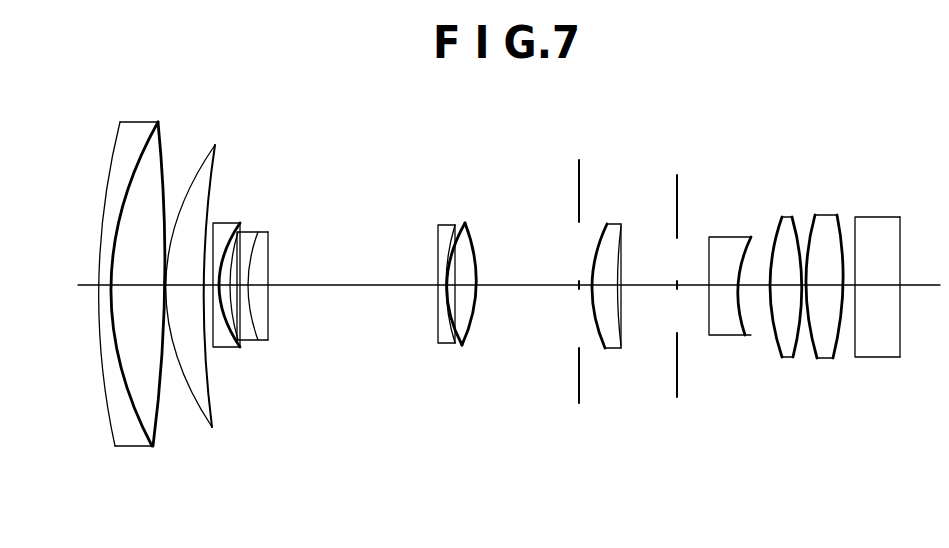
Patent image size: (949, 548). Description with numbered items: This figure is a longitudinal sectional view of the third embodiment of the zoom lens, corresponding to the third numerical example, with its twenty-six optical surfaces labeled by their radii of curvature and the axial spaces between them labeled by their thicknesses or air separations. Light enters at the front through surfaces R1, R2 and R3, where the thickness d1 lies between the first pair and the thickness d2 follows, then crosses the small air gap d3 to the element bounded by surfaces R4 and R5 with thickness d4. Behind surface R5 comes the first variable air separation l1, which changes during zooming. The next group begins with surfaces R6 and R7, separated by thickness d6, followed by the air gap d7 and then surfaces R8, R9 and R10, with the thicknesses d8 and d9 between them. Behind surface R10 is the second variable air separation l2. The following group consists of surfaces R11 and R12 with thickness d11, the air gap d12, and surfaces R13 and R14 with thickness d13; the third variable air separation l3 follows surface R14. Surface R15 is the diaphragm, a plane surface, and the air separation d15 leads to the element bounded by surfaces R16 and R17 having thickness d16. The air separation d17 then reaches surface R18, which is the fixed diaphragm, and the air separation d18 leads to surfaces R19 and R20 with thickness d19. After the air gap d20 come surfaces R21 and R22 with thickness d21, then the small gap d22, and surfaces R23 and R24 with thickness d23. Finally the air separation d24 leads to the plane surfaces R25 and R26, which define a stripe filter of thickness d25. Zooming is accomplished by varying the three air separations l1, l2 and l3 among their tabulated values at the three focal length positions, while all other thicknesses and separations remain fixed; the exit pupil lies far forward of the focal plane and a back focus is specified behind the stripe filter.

The radius of curvature of the first surface R1 is at (113, 445).
The radius of curvature of the second surface R2 is at (146, 446).
The radius of curvature of the third surface R3 is at (155, 447).
The radius of curvature of the fourth surface R4 is at (209, 428).
The radius of curvature of the fifth surface R5 is at (213, 428).
The radius of curvature of the sixth surface R6 is at (216, 347).
The radius of curvature of the seventh surface R7 is at (233, 347).
The radius of curvature of the eighth surface R8 is at (246, 340).
The radius of curvature of the ninth surface R9 is at (262, 340).
The radius of curvature of the tenth surface R10 is at (270, 325).
The radius of curvature of the eleventh surface R11 is at (438, 336).
The radius of curvature of the twelfth surface R12 is at (452, 342).
The radius of curvature of the thirteenth surface R13 is at (462, 345).
The radius of curvature of the fourteenth surface R14 is at (480, 340).
The diaphragm R15 is at (579, 403).
The radius of curvature of the sixteenth surface R16 is at (607, 348).
The radius of curvature of the seventeenth surface R17 is at (620, 348).
The fixed diaphragm R18 is at (677, 397).
The radius of curvature of the nineteenth surface R19 is at (710, 335).
The radius of curvature of the twentieth surface R20 is at (750, 335).
The radius of curvature of the twenty-first surface R21 is at (782, 357).
The radius of curvature of the twenty-second surface R22 is at (793, 357).
The radius of curvature of the twenty-third surface R23 is at (817, 358).
The radius of curvature of the twenty-fourth surface R24 is at (834, 358).
The stripe filter surface R25 is at (858, 357).
The stripe filter surface R26 is at (898, 357).
The axial thickness d1 is at (101, 284).
The axial thickness d2 is at (122, 284).
The axial air separation d3 is at (167, 256).
The axial thickness d4 is at (173, 284).
The axial thickness d6 is at (214, 283).
The axial air separation d7 is at (223, 283).
The axial thickness d8 is at (238, 283).
The axial thickness d9 is at (258, 283).
The axial thickness d11 is at (440, 284).
The axial air separation d12 is at (463, 283).
The axial thickness d13 is at (481, 284).
The axial air separation d15 is at (582, 284).
The axial thickness d16 is at (598, 284).
The axial air separation d17 is at (623, 284).
The axial air separation d18 is at (680, 284).
The axial thickness d19 is at (720, 284).
The axial air separation d20 is at (752, 284).
The axial thickness d21 is at (778, 284).
The axial air separation d22 is at (803, 282).
The axial thickness d23 is at (812, 284).
The axial air separation d24 is at (850, 284).
The axial thickness d25 is at (882, 284).
The variable axial air separation l1 is at (207, 252).
The variable axial air separation l2 is at (367, 280).
The variable axial air separation l3 is at (528, 282).